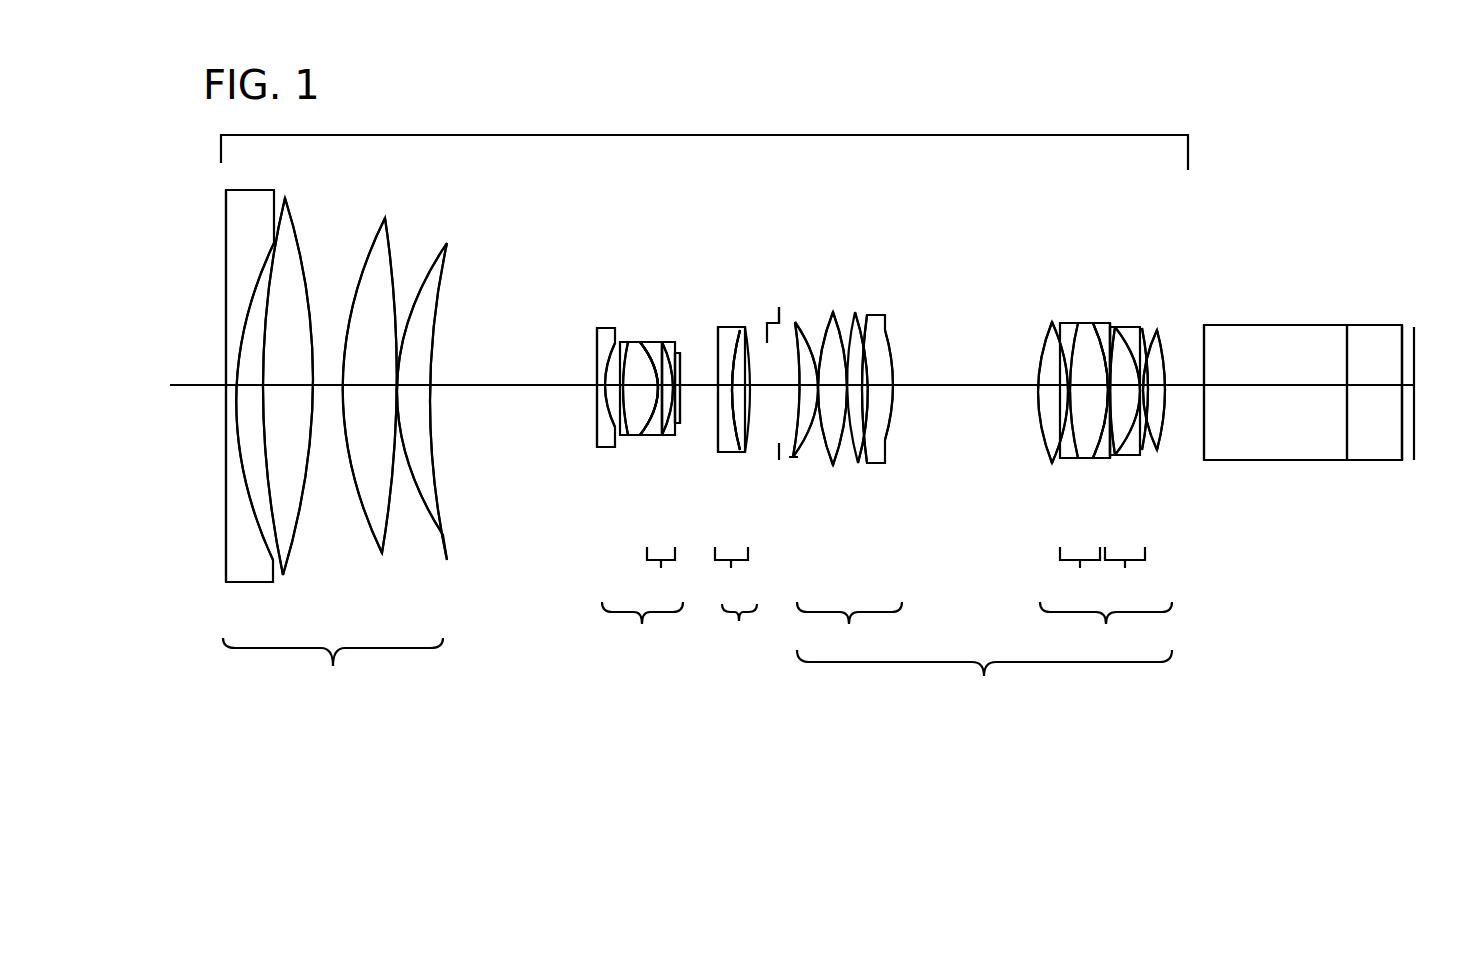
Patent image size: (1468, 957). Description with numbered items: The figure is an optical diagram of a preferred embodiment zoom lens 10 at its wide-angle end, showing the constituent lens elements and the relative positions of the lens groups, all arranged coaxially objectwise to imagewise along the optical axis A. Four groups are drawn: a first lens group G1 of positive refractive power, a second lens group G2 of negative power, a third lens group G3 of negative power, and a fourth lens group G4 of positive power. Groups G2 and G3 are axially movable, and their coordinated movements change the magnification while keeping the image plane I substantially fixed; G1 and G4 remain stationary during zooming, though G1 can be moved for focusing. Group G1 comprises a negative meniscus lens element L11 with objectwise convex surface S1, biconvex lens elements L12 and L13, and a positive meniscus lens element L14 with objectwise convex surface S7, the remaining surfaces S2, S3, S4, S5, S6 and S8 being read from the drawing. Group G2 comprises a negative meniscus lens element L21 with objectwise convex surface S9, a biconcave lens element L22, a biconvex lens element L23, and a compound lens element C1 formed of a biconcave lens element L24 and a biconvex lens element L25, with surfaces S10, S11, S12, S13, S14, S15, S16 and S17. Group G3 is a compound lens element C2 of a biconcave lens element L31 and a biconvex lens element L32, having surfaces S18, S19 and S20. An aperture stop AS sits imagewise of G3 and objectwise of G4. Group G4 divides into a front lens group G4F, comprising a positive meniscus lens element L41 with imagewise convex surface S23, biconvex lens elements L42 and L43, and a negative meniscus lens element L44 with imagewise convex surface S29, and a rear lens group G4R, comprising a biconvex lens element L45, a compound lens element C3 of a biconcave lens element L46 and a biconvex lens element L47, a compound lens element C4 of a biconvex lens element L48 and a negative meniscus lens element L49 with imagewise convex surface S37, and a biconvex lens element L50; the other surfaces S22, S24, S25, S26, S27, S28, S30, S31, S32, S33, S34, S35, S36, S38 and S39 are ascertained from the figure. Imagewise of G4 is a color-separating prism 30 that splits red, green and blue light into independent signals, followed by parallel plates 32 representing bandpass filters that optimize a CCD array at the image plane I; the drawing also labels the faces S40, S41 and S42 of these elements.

The zoom lens 10 is at (704, 136).
The optical axis A is at (198, 388).
The image plane I is at (1415, 405).
The aperture stop AS is at (779, 370).
The color-separating prism 30 is at (1310, 381).
The parallel plates 32 is at (1379, 381).
The first lens group G1 is at (328, 423).
The second lens group G2 is at (622, 442).
The third lens group G3 is at (730, 430).
The fourth lens group G4 is at (992, 463).
The front lens group G4F is at (854, 434).
The rear lens group G4R is at (1108, 429).
The compound lens element C1 is at (613, 420).
The compound lens element C2 is at (730, 407).
The compound lens element C3 is at (1049, 407).
The compound lens element C4 is at (1129, 412).
The negative lens element L11 is at (247, 394).
The positive lens element L12 is at (296, 385).
The positive lens element L13 is at (381, 387).
The positive lens element L14 is at (440, 393).
The negative lens element L21 is at (575, 397).
The negative lens element L22 is at (596, 399).
The positive lens element L23 is at (595, 383).
The biconcave lens element L24 is at (664, 384).
The biconvex lens element L25 is at (690, 365).
The biconcave lens element L31 is at (727, 367).
The biconvex lens element L32 is at (745, 453).
The positive lens element L41 is at (797, 379).
The positive lens element L42 is at (865, 372).
The positive lens element L43 is at (883, 414).
The negative lens element L44 is at (914, 413).
The positive lens element L45 is at (1019, 385).
The biconcave lens element L46 is at (1046, 379).
The biconvex lens element L47 is at (1074, 373).
The biconvex lens element L48 is at (1115, 365).
The negative meniscus lens element L49 is at (1158, 377).
The positive lens element L50 is at (1194, 368).
The objectwise convex surface S1 is at (227, 218).
The lens surface S2 is at (262, 243).
The lens surface S3 is at (278, 222).
The lens surface S4 is at (298, 238).
The lens surface S5 is at (378, 224).
The lens surface S6 is at (390, 228).
The objectwise convex surface S7 is at (441, 248).
The lens surface S8 is at (448, 255).
The objectwise convex surface S9 is at (598, 350).
The lens surface S10 is at (608, 370).
The lens surface S11 is at (624, 386).
The lens surface S12 is at (622, 340).
The lens surface S13 is at (645, 345).
The lens surface S14 is at (645, 343).
The lens surface S15 is at (665, 343).
The lens surface S16 is at (675, 345).
The lens surface S17 is at (677, 355).
The lens surface S18 is at (706, 360).
The lens surface S19 is at (724, 325).
The lens surface S20 is at (745, 328).
The lens surface S22 is at (787, 323).
The imagewise convex surface S23 is at (800, 320).
The lens surface S24 is at (826, 318).
The lens surface S25 is at (838, 315).
The lens surface S26 is at (852, 320).
The lens surface S27 is at (866, 316).
The lens surface S28 is at (870, 324).
The imagewise convex surface S29 is at (893, 358).
The lens surface S30 is at (1050, 333).
The lens surface S31 is at (1053, 323).
The lens surface S32 is at (1062, 343).
The lens surface S33 is at (1093, 323).
The lens surface S34 is at (1098, 323).
The lens surface S35 is at (1105, 327).
The lens surface S36 is at (1132, 328).
The imagewise convex surface S37 is at (1147, 330).
The lens surface S38 is at (1160, 328).
The lens surface S39 is at (1163, 330).
The block surface S40 is at (1205, 328).
The block surface S41 is at (1347, 335).
The block surface S42 is at (1402, 335).